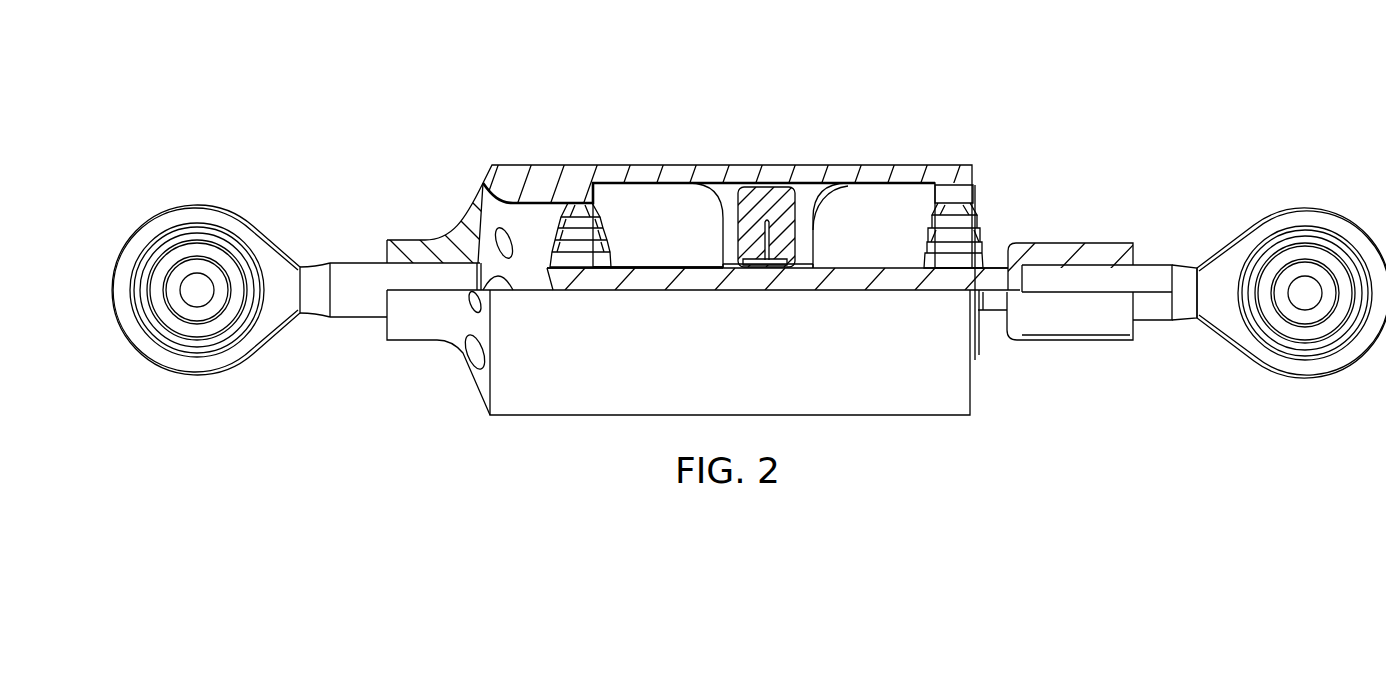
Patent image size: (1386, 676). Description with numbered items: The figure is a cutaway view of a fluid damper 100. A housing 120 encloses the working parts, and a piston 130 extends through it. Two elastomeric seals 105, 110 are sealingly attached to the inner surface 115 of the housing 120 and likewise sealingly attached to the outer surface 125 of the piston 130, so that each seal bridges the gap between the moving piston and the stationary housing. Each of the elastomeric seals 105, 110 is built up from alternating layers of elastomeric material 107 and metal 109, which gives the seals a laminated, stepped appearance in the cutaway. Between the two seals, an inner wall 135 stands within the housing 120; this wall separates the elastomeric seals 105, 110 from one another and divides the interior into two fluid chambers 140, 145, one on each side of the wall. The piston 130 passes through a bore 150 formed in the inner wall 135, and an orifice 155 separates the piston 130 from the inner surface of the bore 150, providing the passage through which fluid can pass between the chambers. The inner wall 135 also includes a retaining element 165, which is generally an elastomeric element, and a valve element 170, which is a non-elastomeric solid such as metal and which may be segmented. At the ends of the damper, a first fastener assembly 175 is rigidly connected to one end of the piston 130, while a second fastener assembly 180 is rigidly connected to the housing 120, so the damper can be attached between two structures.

The fluid damper 100 is at (684, 93).
The elastomeric seal 105 is at (542, 263).
The elastomeric material 107 is at (940, 269).
The metal 109 is at (988, 260).
The elastomeric seal 110 is at (986, 217).
The inner surface 115 is at (550, 197).
The housing 120 is at (556, 424).
The outer surface 125 is at (880, 270).
The piston 130 is at (680, 260).
The inner wall 135 is at (845, 185).
The fluid chamber 140 is at (615, 195).
The fluid chamber 145 is at (908, 195).
The bore 150 is at (802, 269).
The orifice 155 is at (730, 269).
The retaining element 165 is at (797, 236).
The valve element 170 is at (766, 187).
The first fastener assembly 175 is at (1184, 243).
The second fastener assembly 180 is at (317, 242).